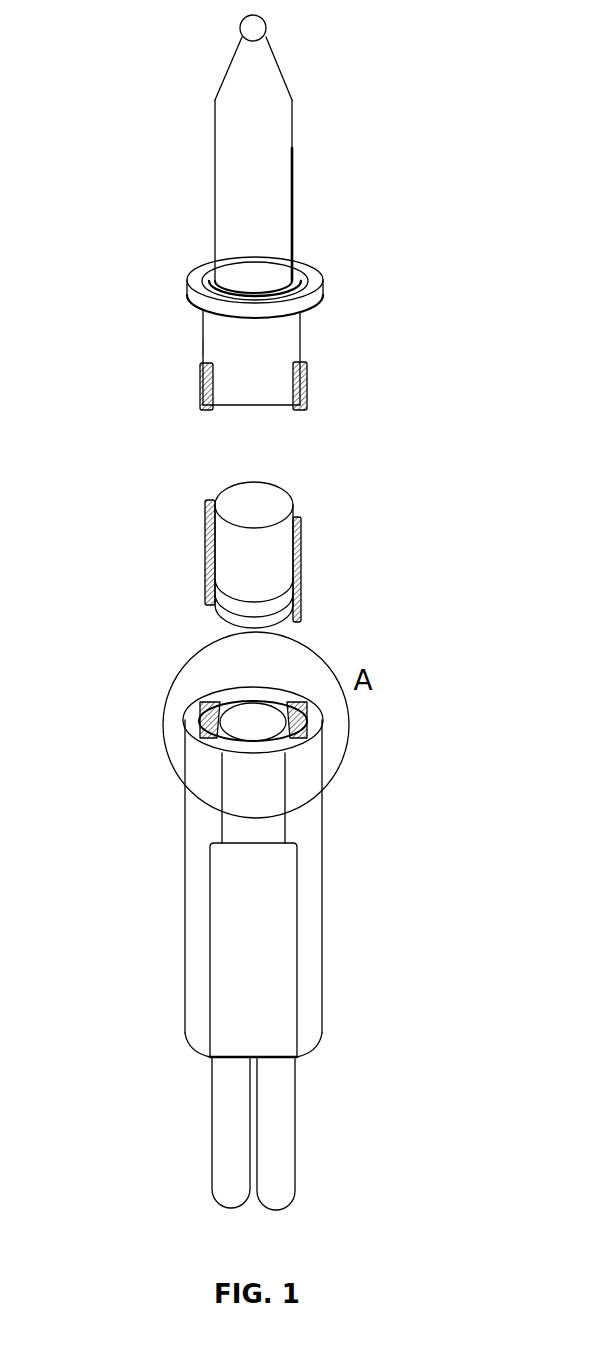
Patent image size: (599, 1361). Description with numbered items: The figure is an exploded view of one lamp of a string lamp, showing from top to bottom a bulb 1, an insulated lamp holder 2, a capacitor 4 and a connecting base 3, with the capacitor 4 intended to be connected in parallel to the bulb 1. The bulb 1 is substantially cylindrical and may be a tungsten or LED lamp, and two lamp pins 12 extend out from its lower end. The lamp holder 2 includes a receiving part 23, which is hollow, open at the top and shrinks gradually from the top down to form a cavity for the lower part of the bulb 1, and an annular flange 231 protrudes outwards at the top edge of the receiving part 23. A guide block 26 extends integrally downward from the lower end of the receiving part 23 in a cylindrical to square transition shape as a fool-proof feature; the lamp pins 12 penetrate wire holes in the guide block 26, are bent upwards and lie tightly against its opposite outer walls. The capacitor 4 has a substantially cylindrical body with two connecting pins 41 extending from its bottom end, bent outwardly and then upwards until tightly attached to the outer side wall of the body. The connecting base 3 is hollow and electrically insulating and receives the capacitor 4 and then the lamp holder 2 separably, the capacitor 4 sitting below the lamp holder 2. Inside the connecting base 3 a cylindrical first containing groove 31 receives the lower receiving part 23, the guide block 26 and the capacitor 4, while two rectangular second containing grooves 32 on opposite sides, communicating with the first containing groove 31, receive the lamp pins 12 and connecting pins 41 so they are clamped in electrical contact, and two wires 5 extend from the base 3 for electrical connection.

The bulb 1 is at (270, 115).
The insulated lamp holder 2 is at (287, 347).
The annular flange 231 is at (307, 290).
The receiving part 23 is at (225, 345).
The guide block 26 is at (243, 385).
The lamp pins 12 is at (307, 382).
The capacitor 4 is at (268, 507).
The connecting pins 41 is at (300, 573).
The connecting base 3 is at (317, 912).
The first containing groove 31 is at (243, 710).
The second containing grooves 32 is at (200, 716).
The wires 5 is at (297, 1128).